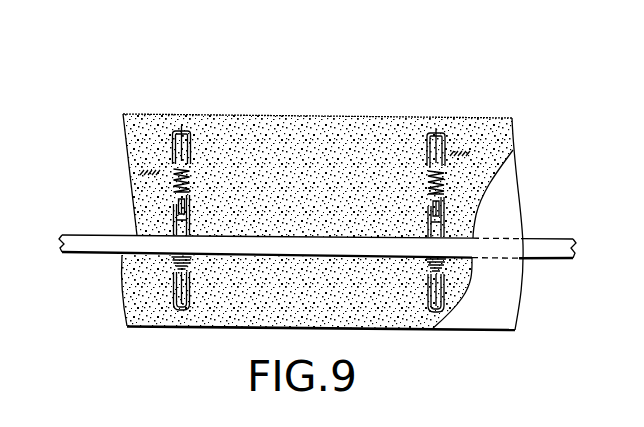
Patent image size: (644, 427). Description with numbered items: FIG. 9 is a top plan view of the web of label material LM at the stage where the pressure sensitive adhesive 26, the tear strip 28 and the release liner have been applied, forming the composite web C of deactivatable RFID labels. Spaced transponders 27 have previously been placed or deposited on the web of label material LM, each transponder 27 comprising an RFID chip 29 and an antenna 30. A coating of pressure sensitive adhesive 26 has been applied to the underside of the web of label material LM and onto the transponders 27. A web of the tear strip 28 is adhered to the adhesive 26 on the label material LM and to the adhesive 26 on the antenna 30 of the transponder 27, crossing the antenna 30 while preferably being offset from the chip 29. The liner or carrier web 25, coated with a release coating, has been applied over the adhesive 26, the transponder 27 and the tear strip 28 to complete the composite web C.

The carrier web 25 is at (490, 283).
The pressure sensitive adhesive 26 is at (355, 148).
The RFID transponder 27 is at (150, 172).
The tear strip 28 is at (85, 254).
The RFID chip 29 is at (173, 220).
The antenna 30 is at (182, 127).
The label material LM is at (290, 117).
The composite web C is at (483, 330).